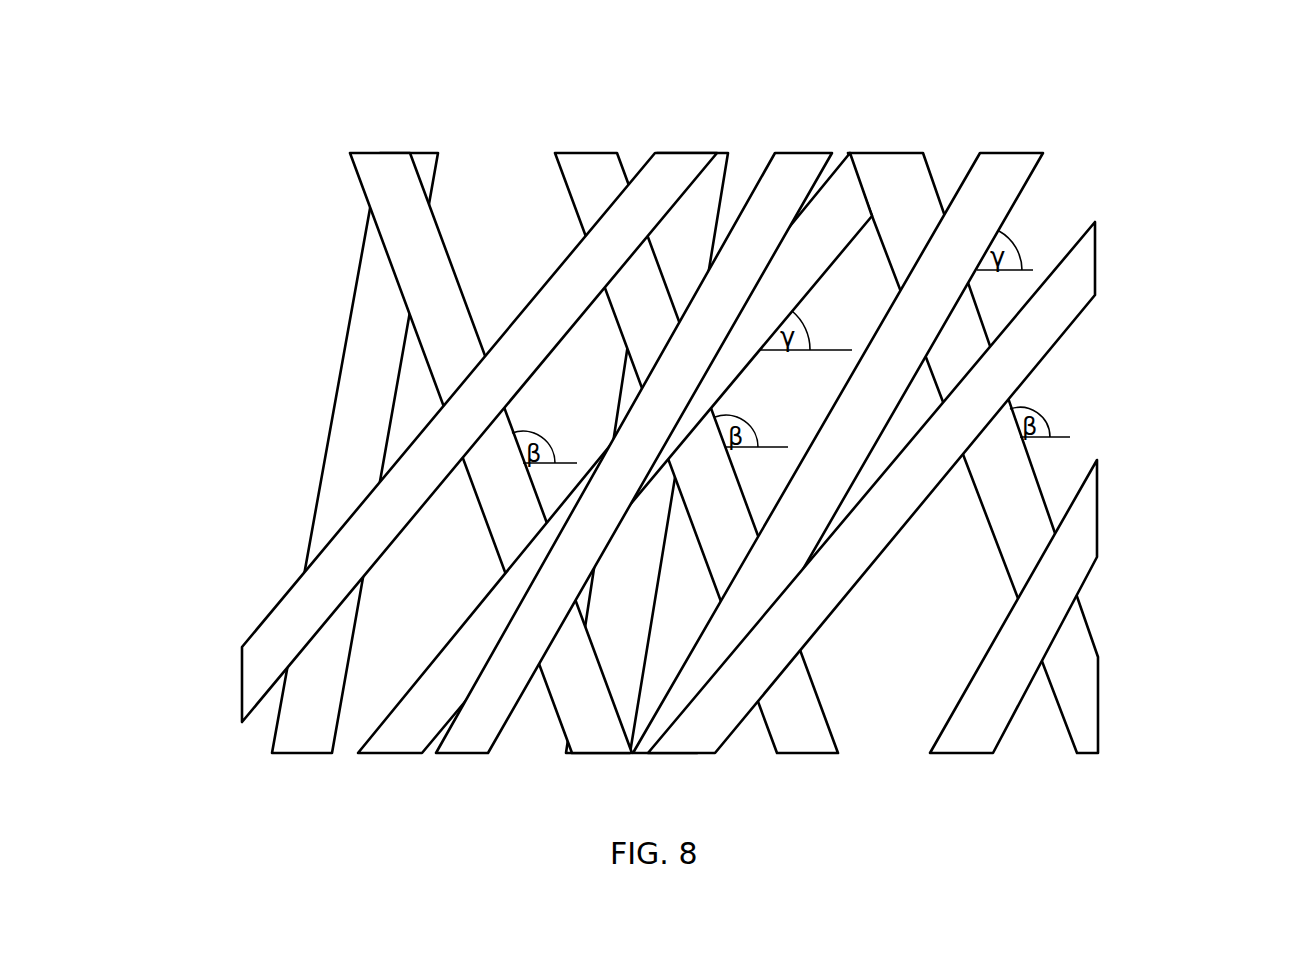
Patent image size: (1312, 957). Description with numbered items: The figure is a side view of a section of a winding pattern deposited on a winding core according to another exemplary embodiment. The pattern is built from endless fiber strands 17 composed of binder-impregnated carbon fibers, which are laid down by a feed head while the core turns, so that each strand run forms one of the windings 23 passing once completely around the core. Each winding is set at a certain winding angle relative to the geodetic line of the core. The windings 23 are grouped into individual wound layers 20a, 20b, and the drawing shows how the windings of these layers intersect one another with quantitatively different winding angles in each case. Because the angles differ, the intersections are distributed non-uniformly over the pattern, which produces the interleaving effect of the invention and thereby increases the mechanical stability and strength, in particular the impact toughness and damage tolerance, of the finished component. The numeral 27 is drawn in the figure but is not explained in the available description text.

The endless fiber strands 17 is at (368, 353).
The first wound layer 20a is at (475, 507).
The wound layer 20b is at (847, 170).
The windings 23 is at (425, 367).
The fiber 27 is at (966, 410).